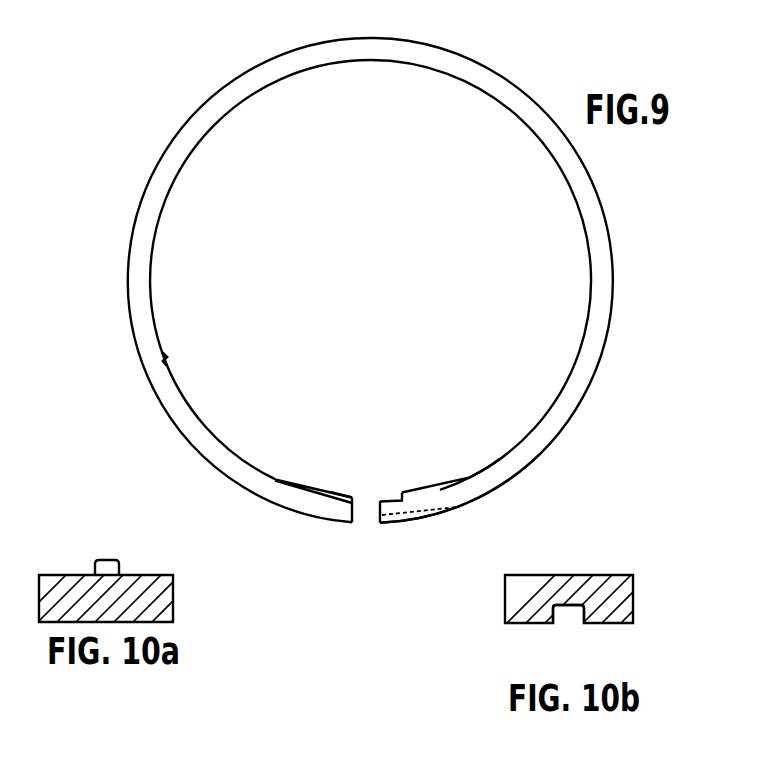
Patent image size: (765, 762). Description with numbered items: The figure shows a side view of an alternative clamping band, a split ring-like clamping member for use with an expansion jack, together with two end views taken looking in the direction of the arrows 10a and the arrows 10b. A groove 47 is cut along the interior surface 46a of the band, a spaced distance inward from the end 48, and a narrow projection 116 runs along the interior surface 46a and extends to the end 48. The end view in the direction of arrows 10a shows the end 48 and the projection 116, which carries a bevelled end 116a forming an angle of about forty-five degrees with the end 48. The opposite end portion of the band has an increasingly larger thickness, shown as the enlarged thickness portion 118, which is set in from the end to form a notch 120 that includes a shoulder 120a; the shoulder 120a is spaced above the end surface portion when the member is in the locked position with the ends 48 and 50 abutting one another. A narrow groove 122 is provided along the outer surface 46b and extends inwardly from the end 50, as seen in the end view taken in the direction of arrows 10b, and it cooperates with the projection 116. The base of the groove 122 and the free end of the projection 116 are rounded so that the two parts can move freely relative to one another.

In FIG. 9, the interior surface 46a is at (152, 280).
In FIG. 9, the outer surface 46b is at (541, 453).
In FIG. 9, the groove 47 is at (158, 366).
In FIG. 9, the end 48 is at (354, 522).
In FIG. 9, the end 50 is at (380, 519).
In FIG. 9, the projection 116 is at (290, 481).
In FIG. 10A, the projection 116 is at (107, 560).
In FIG. 9, the bevelled end 116a is at (342, 487).
In FIG. 9, the enlarged thickness portion 118 is at (463, 484).
In FIG. 9, the notch 120 is at (388, 492).
In FIG. 9, the shoulder 120a is at (405, 487).
In FIG. 9, the groove 122 is at (437, 518).
In FIG. 10B, the groove 122 is at (568, 614).
In FIG. 9, the arrows 10a–10a' 10a is at (353, 404).
In FIG. 9, the arrows 10b–10b' 10b is at (379, 383).